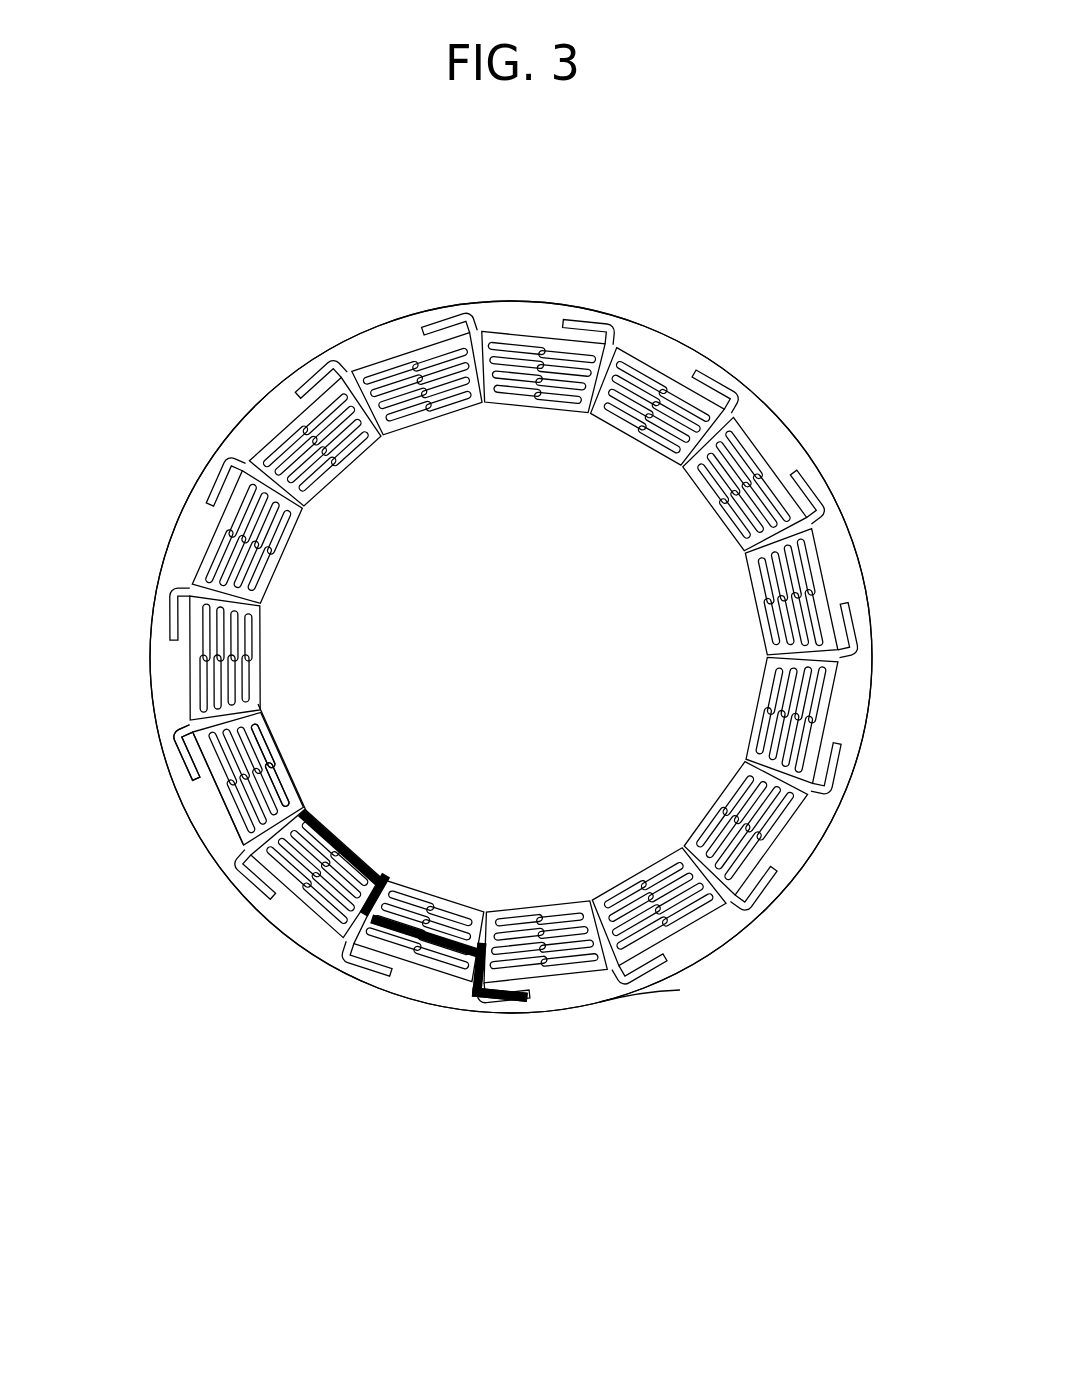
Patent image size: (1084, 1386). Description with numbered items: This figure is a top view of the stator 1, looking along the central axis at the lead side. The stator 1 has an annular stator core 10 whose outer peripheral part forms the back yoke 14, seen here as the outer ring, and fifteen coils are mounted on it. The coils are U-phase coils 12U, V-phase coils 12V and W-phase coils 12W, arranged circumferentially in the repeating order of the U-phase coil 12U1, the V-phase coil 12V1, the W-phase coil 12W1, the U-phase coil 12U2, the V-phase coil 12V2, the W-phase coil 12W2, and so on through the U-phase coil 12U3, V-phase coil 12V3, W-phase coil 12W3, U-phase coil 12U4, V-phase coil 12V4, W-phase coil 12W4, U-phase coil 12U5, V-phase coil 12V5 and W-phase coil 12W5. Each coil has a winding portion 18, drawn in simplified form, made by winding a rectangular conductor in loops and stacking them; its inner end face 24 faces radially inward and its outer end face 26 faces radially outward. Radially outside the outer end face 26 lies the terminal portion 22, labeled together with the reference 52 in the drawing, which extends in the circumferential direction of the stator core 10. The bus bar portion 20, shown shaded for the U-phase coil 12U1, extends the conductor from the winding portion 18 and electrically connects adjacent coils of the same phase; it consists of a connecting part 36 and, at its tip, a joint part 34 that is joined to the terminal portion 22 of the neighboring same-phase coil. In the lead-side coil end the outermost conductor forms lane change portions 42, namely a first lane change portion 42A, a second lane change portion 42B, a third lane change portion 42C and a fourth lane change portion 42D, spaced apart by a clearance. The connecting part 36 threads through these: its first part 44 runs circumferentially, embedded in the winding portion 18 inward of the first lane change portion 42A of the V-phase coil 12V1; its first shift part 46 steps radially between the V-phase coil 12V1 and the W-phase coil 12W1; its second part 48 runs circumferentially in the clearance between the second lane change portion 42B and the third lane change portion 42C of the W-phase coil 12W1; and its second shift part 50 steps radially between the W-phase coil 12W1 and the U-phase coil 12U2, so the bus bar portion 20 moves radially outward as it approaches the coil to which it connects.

The stator 1 is at (640, 207).
The stator core 10 is at (757, 929).
The U-phase coil 12U is at (525, 689).
The V-phase coil 12V is at (500, 634).
The W-phase coil 12W is at (491, 711).
The U-phase coil 12U1 is at (221, 812).
The U-phase coil 12U2 is at (570, 980).
The U-phase coil 12U3 is at (848, 702).
The U-phase coil 12U4 is at (664, 368).
The U-phase coil 12U5 is at (284, 418).
The V-phase coil 12V1 is at (293, 899).
The V-phase coil 12V2 is at (686, 934).
The V-phase coil 12V3 is at (830, 556).
The V-phase coil 12V4 is at (530, 330).
The V-phase coil 12V5 is at (208, 532).
The W-phase coil 12W1 is at (403, 970).
The W-phase coil 12W2 is at (786, 839).
The W-phase coil 12W3 is at (758, 438).
The W-phase coil 12W4 is at (388, 358).
The W-phase coil 12W5 is at (180, 693).
The back yoke 14 is at (647, 998).
The winding portion 18 is at (276, 752).
The bus bar portion 20 is at (447, 839).
The terminal portion 22 is at (382, 919).
The inner end face 24 is at (296, 767).
The outer end face 26 is at (262, 930).
The joint part 34 is at (540, 984).
The connecting part 36 is at (428, 856).
The lane change portion 42 is at (416, 1048).
The first lane change portion 42A is at (359, 924).
The second lane change portion 42B is at (366, 912).
The third lane change portion 42C is at (373, 899).
The fourth lane change portion 42D is at (380, 887).
The first part 44 is at (378, 875).
The first shift part 46 is at (405, 897).
The second part 48 is at (430, 915).
The second shift part 50 is at (470, 950).
The lead end portion 52 is at (520, 996).